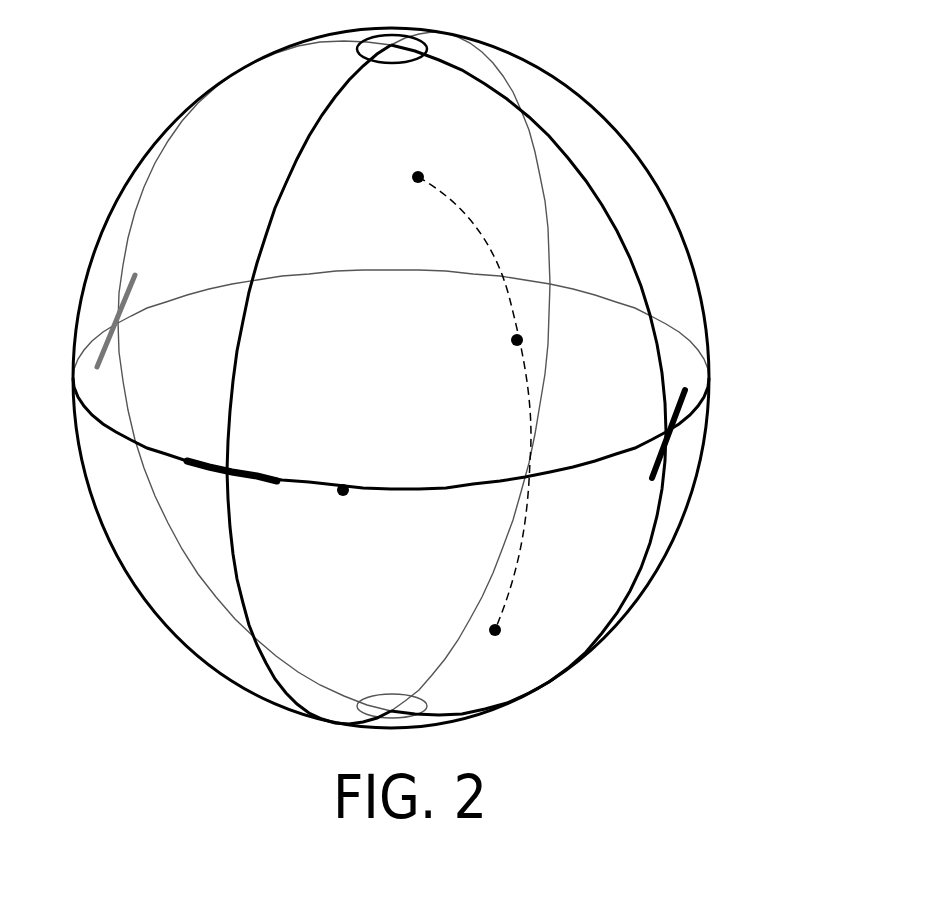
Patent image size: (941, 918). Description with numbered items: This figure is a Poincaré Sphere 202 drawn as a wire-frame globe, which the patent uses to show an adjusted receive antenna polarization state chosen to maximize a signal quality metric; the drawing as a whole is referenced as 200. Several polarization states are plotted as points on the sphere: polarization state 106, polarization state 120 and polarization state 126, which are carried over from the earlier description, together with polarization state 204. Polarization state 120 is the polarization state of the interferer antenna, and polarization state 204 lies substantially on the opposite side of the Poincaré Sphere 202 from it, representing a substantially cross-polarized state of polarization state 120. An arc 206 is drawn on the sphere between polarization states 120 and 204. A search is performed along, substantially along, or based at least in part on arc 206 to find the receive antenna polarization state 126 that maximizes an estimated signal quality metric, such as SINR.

The spherical coordinate system / sensor field of view sphere 200 is at (880, 61).
The Poincaré Sphere 202 is at (726, 387).
The arc 206 is at (483, 247).
The polarization state 120 is at (402, 173).
The polarization state 126 is at (503, 335).
The polarization state 106 is at (357, 479).
The polarization state 204 is at (480, 625).